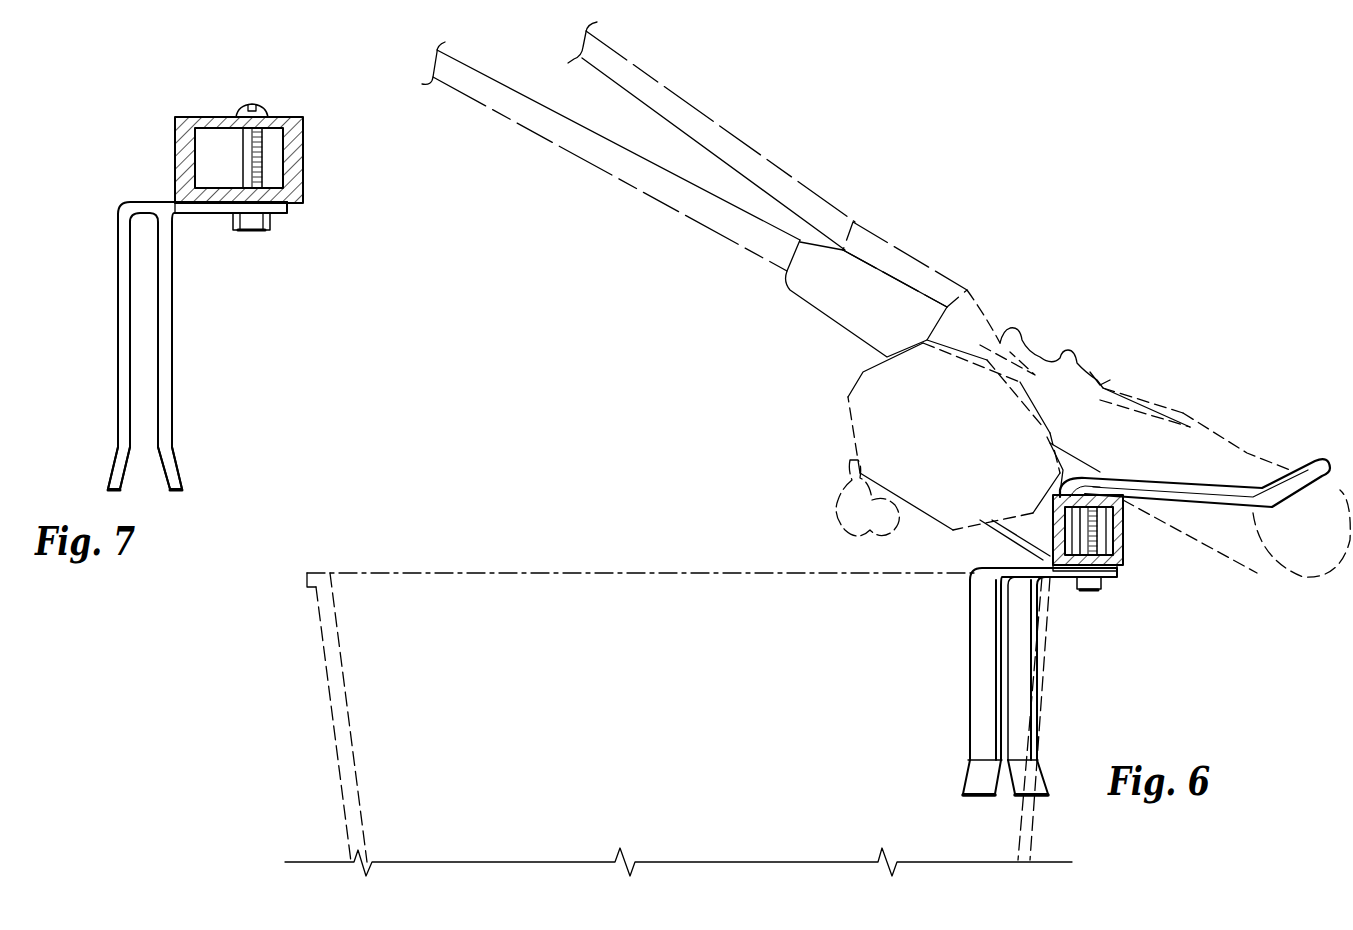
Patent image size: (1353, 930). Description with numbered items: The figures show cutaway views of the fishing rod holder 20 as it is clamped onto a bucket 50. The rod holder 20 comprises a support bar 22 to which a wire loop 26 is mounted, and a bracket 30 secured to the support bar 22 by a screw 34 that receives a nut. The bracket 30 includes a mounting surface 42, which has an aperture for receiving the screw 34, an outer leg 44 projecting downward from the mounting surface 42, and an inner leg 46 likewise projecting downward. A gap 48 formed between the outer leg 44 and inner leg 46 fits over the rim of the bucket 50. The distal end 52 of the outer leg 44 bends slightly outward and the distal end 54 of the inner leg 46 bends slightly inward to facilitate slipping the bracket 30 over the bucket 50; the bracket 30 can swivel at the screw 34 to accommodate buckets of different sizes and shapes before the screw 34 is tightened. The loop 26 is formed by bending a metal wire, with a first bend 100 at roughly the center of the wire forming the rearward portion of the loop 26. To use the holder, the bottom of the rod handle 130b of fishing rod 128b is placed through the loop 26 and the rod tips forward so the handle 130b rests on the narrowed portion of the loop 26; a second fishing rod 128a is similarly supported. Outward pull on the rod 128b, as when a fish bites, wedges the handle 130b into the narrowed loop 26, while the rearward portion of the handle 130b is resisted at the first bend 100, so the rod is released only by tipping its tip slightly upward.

In FIG. 6, the fishing rod holder 20 is at (1123, 565).
In FIG. 7, the support bar 22 is at (295, 143).
In FIG. 6, the loop 26 is at (1253, 492).
In FIG. 7, the bracket 30 is at (110, 257).
In FIG. 6, the bracket 30 is at (977, 703).
In FIG. 7, the screw 34 is at (247, 158).
In FIG. 7, the mounting surface 42 is at (147, 205).
In FIG. 7, the outer leg 44 is at (120, 338).
In FIG. 7, the inner leg 46 is at (168, 357).
In FIG. 7, the gap 48 is at (142, 300).
In FIG. 6, the bucket 50 is at (1035, 825).
In FIG. 7, the distal end of outer leg 52 is at (117, 458).
In FIG. 7, the distal end of inner leg 54 is at (173, 463).
In FIG. 6, the first bend 100 is at (1333, 460).
In FIG. 6, the fishing rod 128a is at (717, 133).
In FIG. 6, the fishing rod 128b is at (677, 200).
In FIG. 6, the rod handle 130b is at (1143, 447).